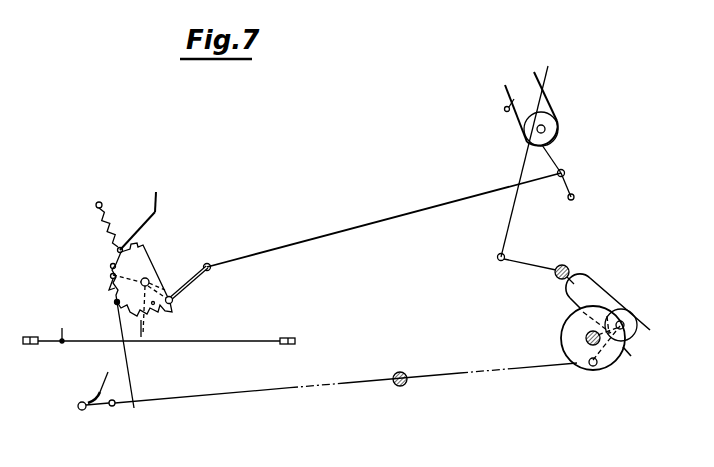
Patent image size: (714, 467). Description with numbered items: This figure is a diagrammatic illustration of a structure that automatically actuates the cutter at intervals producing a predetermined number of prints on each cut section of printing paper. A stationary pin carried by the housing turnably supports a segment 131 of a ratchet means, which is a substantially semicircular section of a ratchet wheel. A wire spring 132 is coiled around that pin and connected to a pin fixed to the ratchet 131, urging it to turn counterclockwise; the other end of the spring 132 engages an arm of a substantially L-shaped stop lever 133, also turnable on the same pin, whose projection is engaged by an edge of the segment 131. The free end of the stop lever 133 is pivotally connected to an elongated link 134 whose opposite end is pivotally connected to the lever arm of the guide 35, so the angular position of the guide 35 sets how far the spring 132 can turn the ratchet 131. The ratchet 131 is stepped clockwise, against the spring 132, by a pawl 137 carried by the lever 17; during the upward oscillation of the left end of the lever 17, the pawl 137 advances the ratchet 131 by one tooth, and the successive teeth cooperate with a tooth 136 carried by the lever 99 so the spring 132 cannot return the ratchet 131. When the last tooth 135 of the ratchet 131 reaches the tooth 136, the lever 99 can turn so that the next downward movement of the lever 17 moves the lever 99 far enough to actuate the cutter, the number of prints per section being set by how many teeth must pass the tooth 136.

The lever 17 is at (283, 391).
The guide 35 is at (553, 110).
The lever 99 is at (122, 329).
The segment of ratchet means 131 is at (135, 258).
The wire spring 132 is at (148, 279).
The stop lever 133 is at (174, 300).
The elongated link 134 is at (357, 229).
The last tooth 135 is at (172, 314).
The tooth 136 is at (113, 298).
The pawl 137 is at (105, 380).